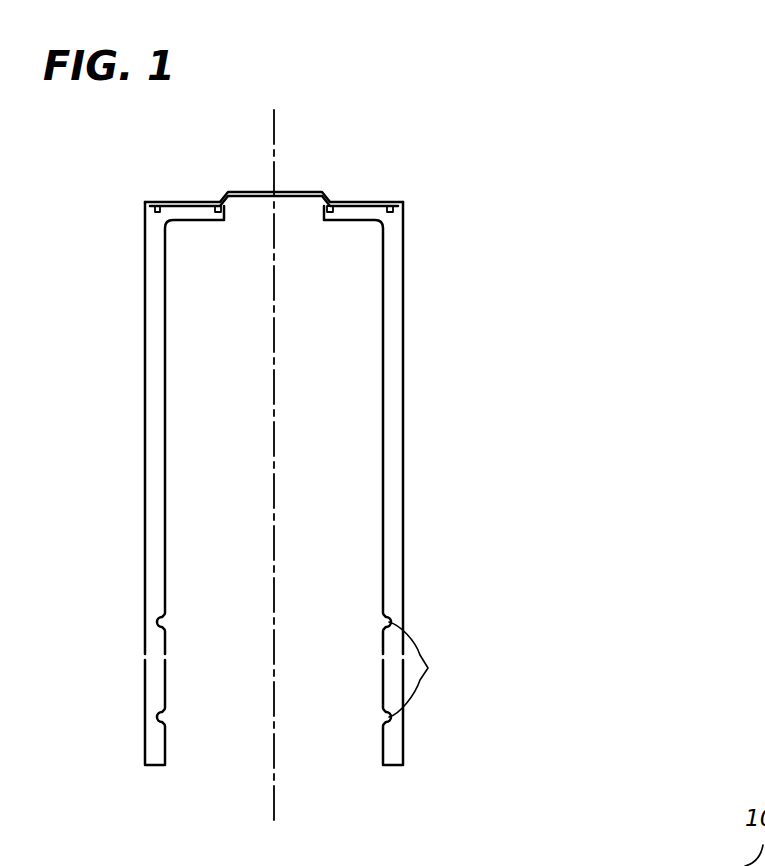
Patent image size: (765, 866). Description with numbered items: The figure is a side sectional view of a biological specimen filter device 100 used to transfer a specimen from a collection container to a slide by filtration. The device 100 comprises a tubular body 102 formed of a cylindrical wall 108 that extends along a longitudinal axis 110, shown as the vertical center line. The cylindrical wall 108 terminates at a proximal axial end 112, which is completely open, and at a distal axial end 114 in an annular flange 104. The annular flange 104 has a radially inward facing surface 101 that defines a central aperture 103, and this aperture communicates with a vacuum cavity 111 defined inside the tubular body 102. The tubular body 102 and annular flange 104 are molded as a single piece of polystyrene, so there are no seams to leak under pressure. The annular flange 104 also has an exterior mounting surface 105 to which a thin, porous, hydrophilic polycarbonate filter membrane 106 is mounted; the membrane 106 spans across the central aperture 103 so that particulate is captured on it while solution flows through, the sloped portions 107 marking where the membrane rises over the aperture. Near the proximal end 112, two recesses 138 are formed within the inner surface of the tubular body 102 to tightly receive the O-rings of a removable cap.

The biological specimen filter device 100 is at (372, 443).
The radially inward facing surface 101 is at (228, 210).
The tubular body 102 is at (412, 304).
The central aperture 103 is at (262, 228).
The annular flange 104 is at (315, 164).
The exterior mounting surface 105 is at (383, 206).
The biological specimen filter membrane 106 is at (219, 200).
The shoulder 107 is at (238, 192).
The cylindrical wall 108 is at (155, 404).
The longitudinal axis 110 is at (274, 110).
The vacuum cavity 111 is at (355, 408).
The proximal axial end 112 is at (227, 740).
The distal axial end 114 is at (296, 132).
The detents 138 is at (428, 668).